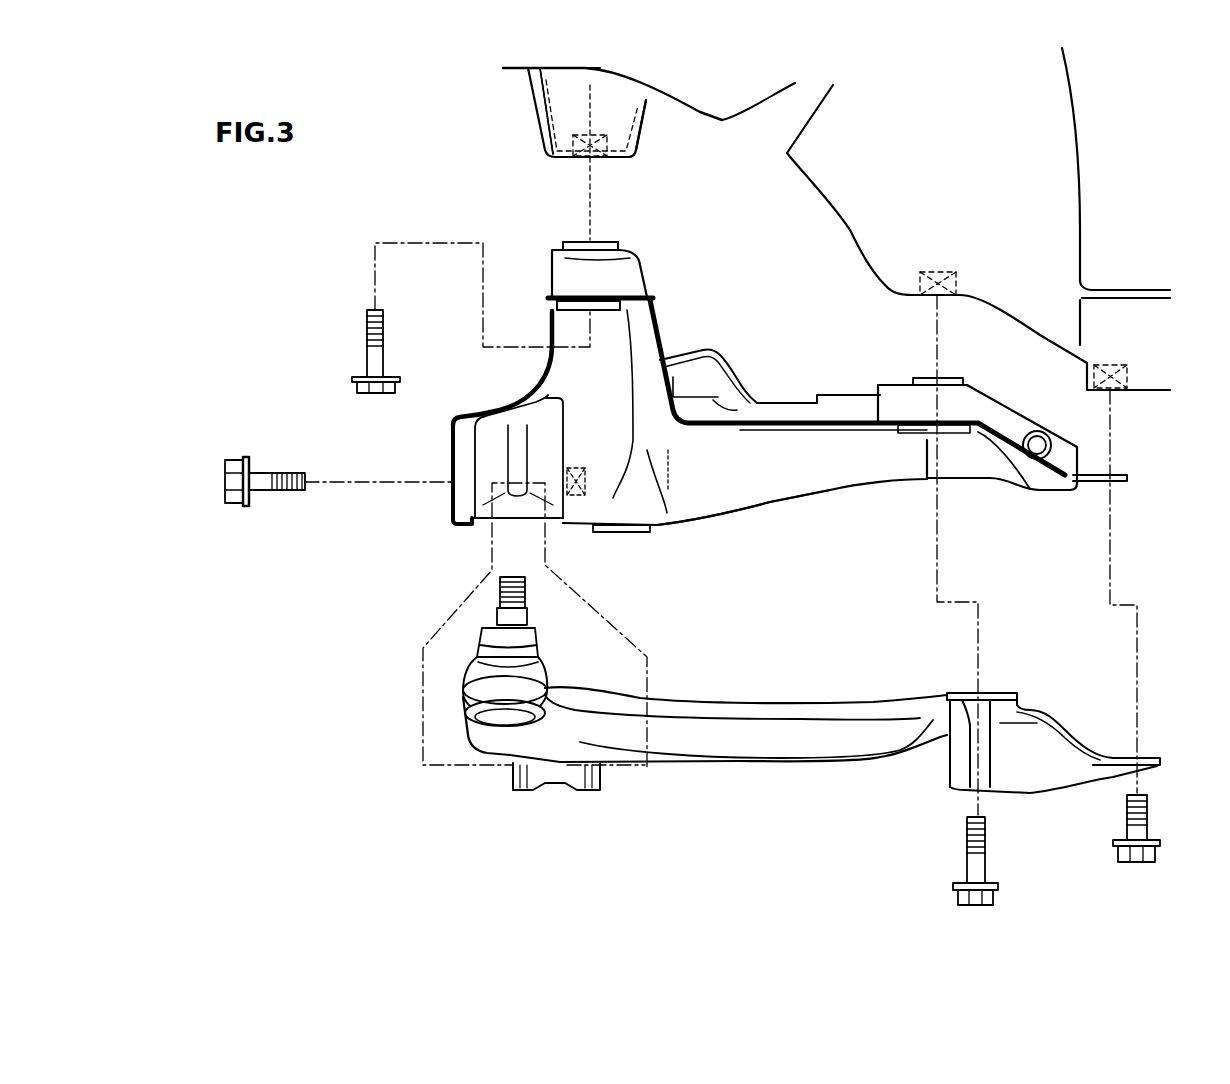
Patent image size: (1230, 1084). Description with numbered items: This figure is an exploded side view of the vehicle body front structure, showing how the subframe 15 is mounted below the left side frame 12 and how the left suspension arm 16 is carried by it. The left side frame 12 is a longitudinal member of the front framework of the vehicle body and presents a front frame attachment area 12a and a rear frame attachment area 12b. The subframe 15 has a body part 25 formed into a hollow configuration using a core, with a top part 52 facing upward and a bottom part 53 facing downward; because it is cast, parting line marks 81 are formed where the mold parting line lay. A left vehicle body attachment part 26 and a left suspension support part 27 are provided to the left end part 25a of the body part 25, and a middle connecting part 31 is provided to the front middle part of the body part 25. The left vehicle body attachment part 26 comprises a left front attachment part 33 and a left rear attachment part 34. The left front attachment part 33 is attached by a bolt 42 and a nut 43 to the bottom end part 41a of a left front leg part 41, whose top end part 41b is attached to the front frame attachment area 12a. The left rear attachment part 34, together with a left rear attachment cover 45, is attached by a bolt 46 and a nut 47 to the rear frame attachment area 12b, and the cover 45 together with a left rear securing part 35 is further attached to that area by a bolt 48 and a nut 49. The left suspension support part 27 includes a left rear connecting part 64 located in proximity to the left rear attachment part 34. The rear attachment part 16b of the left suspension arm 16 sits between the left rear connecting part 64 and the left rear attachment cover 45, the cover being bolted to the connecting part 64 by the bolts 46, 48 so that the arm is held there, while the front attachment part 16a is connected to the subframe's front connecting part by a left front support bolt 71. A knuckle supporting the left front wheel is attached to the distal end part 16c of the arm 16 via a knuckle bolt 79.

The left side frame 12 is at (670, 62).
The front frame attachment area 12a is at (583, 62).
The rear frame attachment area 12b is at (1018, 300).
The subframe 15 is at (548, 318).
The left suspension arm 16 is at (725, 762).
The front attachment part 16a is at (553, 782).
The rear attachment part 16b is at (930, 732).
The distal end part 16c is at (468, 697).
The body part 25 is at (780, 400).
The left end part 25a is at (755, 500).
The left vehicle body attachment part 26 is at (556, 256).
The left suspension support part 27 is at (450, 450).
The middle connecting part 31 is at (697, 370).
The left front attachment part 33 is at (630, 268).
The left rear attachment part 34 is at (970, 392).
The left rear securing part 35 is at (1120, 475).
The left front leg part 41 is at (535, 100).
The bottom end part 41a is at (622, 141).
The top end part 41b is at (562, 80).
The bolt 42 is at (372, 362).
The nut 43 is at (585, 134).
The left rear attachment cover 45 is at (1030, 792).
The bolt 46 is at (975, 866).
The nut 47 is at (932, 270).
The bolt 48 is at (1150, 826).
The nut 49 is at (1118, 366).
The top part 52 is at (835, 410).
The bottom part 53 is at (690, 526).
The left rear connecting part 64 is at (988, 455).
The left front support bolt 71 is at (258, 486).
The knuckle bolt 79 is at (500, 590).
The parting line marks 81 is at (527, 400).